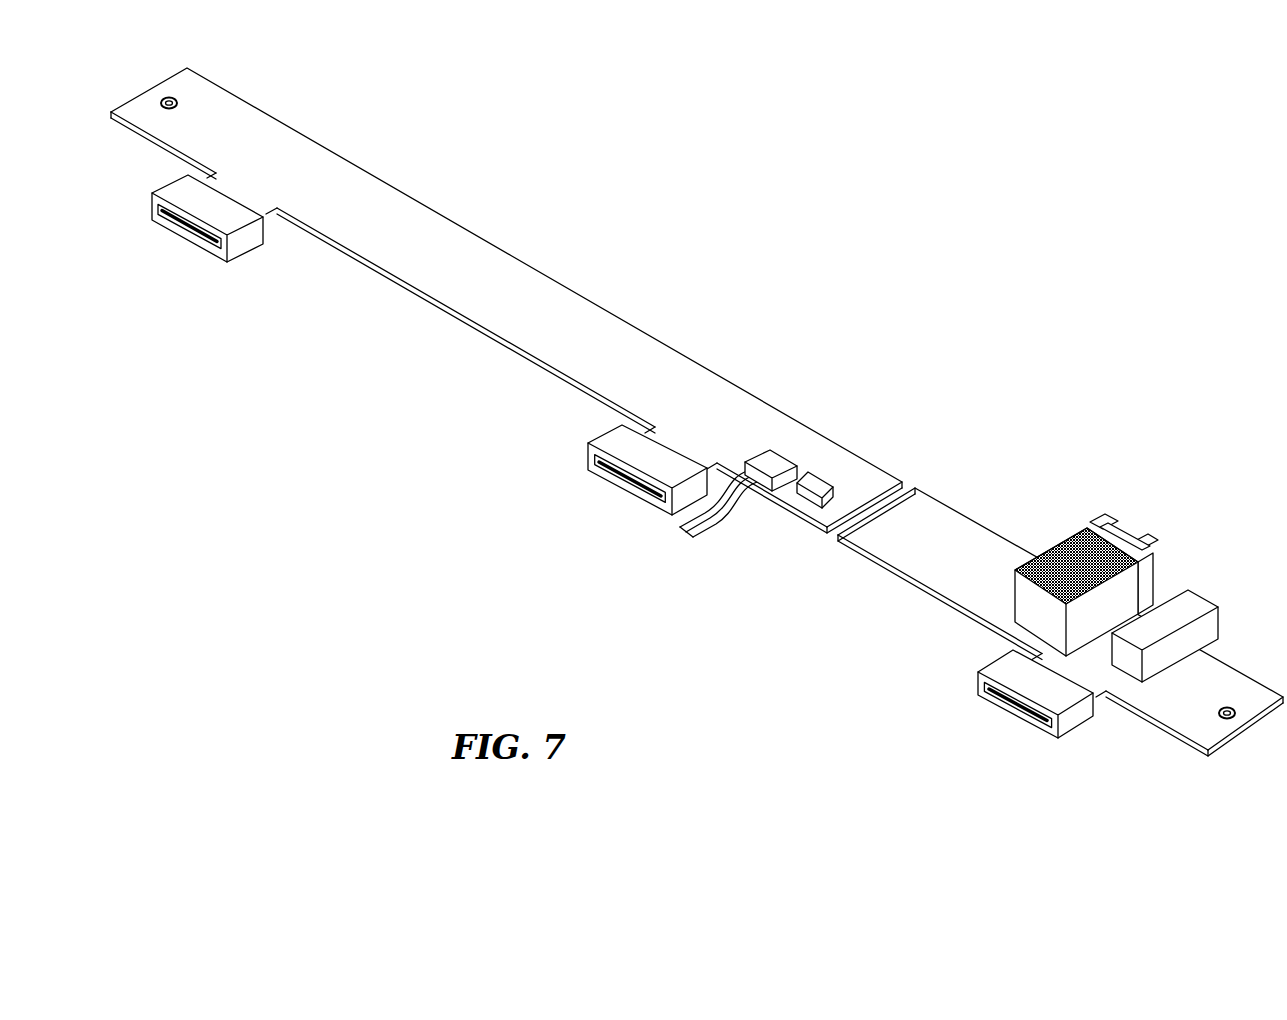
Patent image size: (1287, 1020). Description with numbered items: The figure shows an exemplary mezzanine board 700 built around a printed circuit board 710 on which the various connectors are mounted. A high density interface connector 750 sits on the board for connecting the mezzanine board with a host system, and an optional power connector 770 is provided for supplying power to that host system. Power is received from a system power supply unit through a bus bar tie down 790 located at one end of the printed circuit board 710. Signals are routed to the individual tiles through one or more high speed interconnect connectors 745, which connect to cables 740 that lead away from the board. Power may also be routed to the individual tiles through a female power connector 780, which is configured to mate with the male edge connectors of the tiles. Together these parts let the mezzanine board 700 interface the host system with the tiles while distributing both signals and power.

The mezzanine board 700 is at (543, 307).
The printed circuit board 710 is at (407, 279).
The cables 740 is at (703, 535).
The high speed interconnect connectors 745 is at (821, 483).
The high density interface connector 750 is at (1092, 530).
The power connector 770 is at (1187, 627).
The female power connector 780 is at (1007, 703).
The bus bar tie down 790 is at (1238, 732).